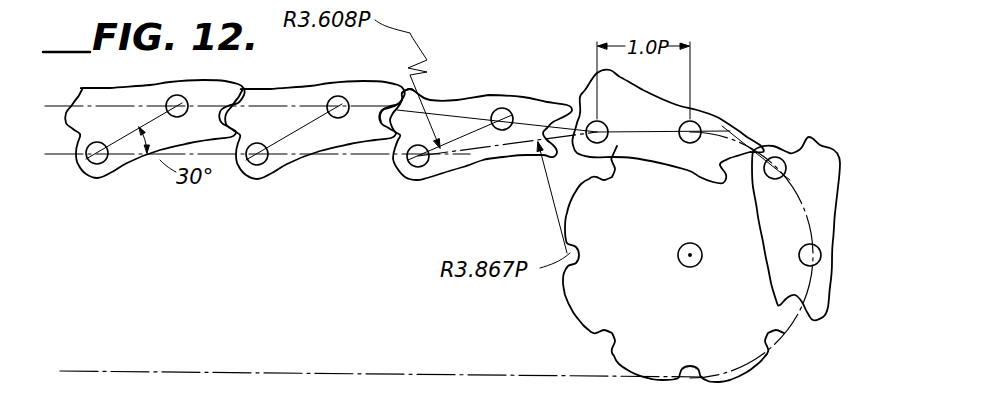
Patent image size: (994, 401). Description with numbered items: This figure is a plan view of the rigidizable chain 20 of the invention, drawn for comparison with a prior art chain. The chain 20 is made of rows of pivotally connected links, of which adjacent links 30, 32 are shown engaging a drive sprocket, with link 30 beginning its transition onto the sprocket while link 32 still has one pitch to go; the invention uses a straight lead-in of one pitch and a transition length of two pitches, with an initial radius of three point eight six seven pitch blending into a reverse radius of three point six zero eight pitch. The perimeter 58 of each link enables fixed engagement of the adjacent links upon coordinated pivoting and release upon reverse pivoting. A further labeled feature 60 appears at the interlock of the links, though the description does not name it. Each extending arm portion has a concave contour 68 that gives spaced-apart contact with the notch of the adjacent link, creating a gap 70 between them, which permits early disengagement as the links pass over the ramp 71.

The rigidizable chain means 20 is at (297, 91).
The gap 70 is at (230, 113).
The concave contour 68 is at (387, 103).
The link tooth 60 is at (390, 103).
The perimeter 58 is at (470, 97).
The ramp 71 is at (490, 142).
The link 30 is at (637, 93).
The link 32 is at (817, 192).